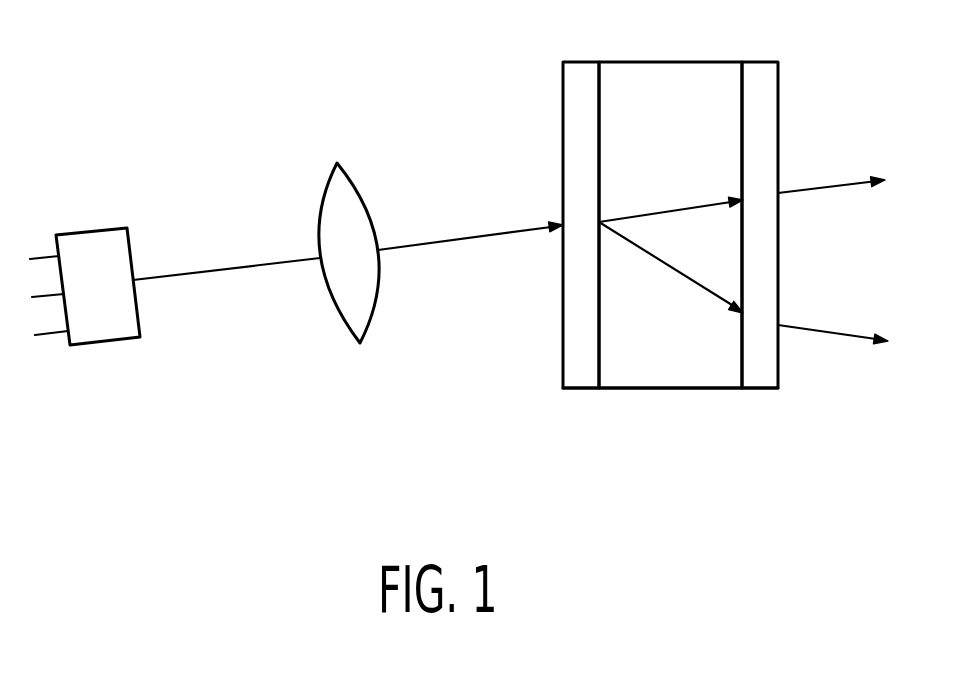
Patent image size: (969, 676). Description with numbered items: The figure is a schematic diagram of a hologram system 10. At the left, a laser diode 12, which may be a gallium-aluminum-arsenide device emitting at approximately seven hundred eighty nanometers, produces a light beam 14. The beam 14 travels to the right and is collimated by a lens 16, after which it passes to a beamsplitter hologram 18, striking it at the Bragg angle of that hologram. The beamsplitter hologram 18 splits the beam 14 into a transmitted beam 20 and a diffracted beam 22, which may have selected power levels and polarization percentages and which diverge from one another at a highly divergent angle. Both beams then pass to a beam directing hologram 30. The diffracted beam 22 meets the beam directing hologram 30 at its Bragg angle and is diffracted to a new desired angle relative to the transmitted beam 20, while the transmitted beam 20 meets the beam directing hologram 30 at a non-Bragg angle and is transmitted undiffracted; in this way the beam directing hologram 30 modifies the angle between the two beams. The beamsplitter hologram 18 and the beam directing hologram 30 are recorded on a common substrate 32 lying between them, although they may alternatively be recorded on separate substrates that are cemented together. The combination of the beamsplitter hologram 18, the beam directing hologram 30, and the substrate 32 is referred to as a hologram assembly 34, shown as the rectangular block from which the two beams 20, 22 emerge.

The hologram system 10 is at (452, 438).
The laser diode 12 is at (92, 228).
The light beam 14 is at (203, 272).
The lens 16 is at (337, 163).
The beamsplitter hologram 18 is at (582, 60).
The transmitted beam 20 is at (638, 212).
The diffracted beam 22 is at (677, 277).
The beam directing hologram 30 is at (762, 57).
The substrate 32 is at (665, 92).
The hologram assembly 34 is at (643, 390).